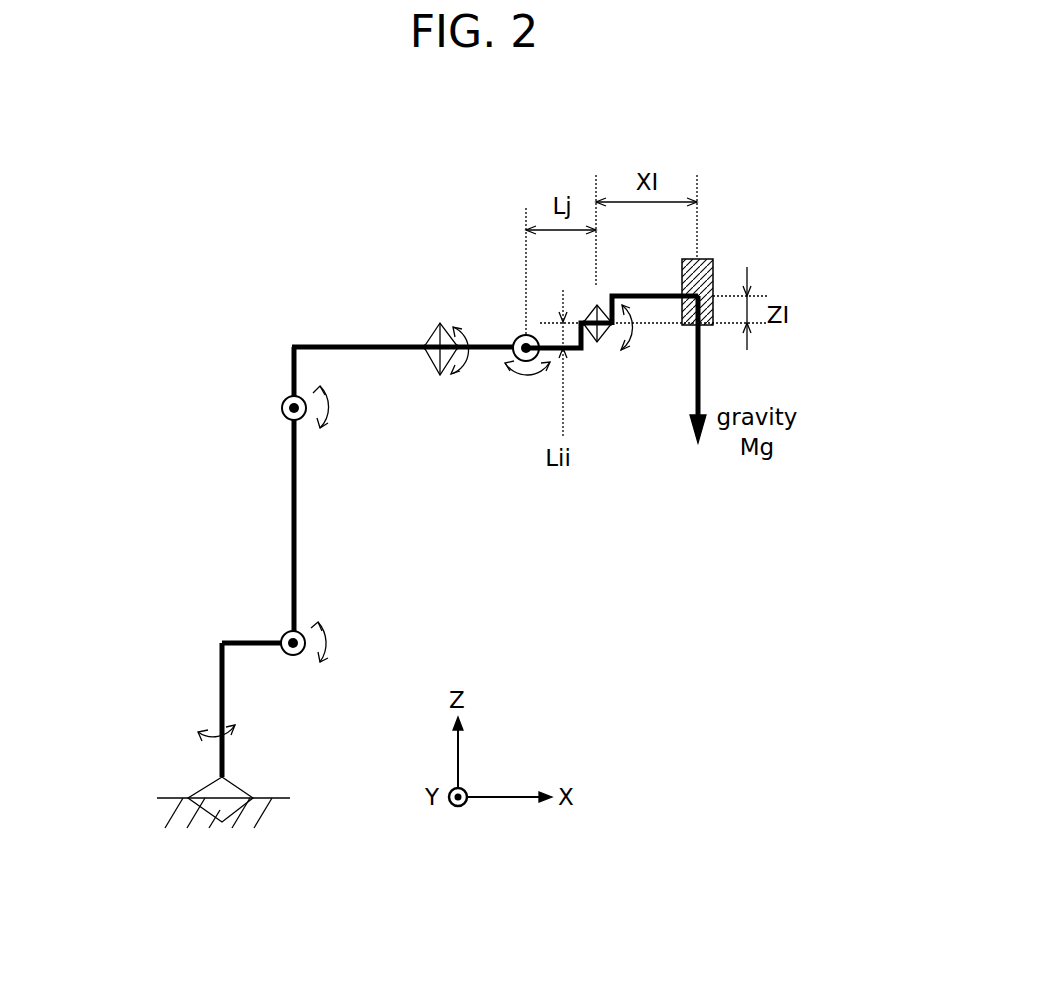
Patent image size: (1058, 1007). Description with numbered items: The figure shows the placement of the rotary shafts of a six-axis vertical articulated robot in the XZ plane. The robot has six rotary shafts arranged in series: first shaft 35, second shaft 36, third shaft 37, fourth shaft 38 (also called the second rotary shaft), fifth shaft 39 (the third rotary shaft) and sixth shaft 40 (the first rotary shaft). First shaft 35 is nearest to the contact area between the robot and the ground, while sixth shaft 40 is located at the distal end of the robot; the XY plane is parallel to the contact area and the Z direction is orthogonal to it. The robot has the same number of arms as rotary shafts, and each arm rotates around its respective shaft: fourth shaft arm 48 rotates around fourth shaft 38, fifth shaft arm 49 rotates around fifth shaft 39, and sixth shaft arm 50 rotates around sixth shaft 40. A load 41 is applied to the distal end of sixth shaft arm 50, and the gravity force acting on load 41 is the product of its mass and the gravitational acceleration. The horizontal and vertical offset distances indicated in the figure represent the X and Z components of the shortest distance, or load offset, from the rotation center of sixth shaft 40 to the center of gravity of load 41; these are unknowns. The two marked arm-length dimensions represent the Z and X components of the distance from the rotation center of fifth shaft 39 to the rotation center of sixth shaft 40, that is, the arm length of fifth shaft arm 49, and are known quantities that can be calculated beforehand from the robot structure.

The first shaft 35 is at (248, 735).
The second shaft 36 is at (380, 535).
The third shaft 37 is at (366, 403).
The fourth shaft 38 is at (417, 319).
The fifth shaft 39 is at (503, 482).
The sixth shaft 40 is at (660, 482).
The load 41 is at (712, 257).
The fourth shaft arm 48 is at (490, 343).
The fifth shaft arm 49 is at (578, 353).
The sixth shaft arm 50 is at (668, 290).